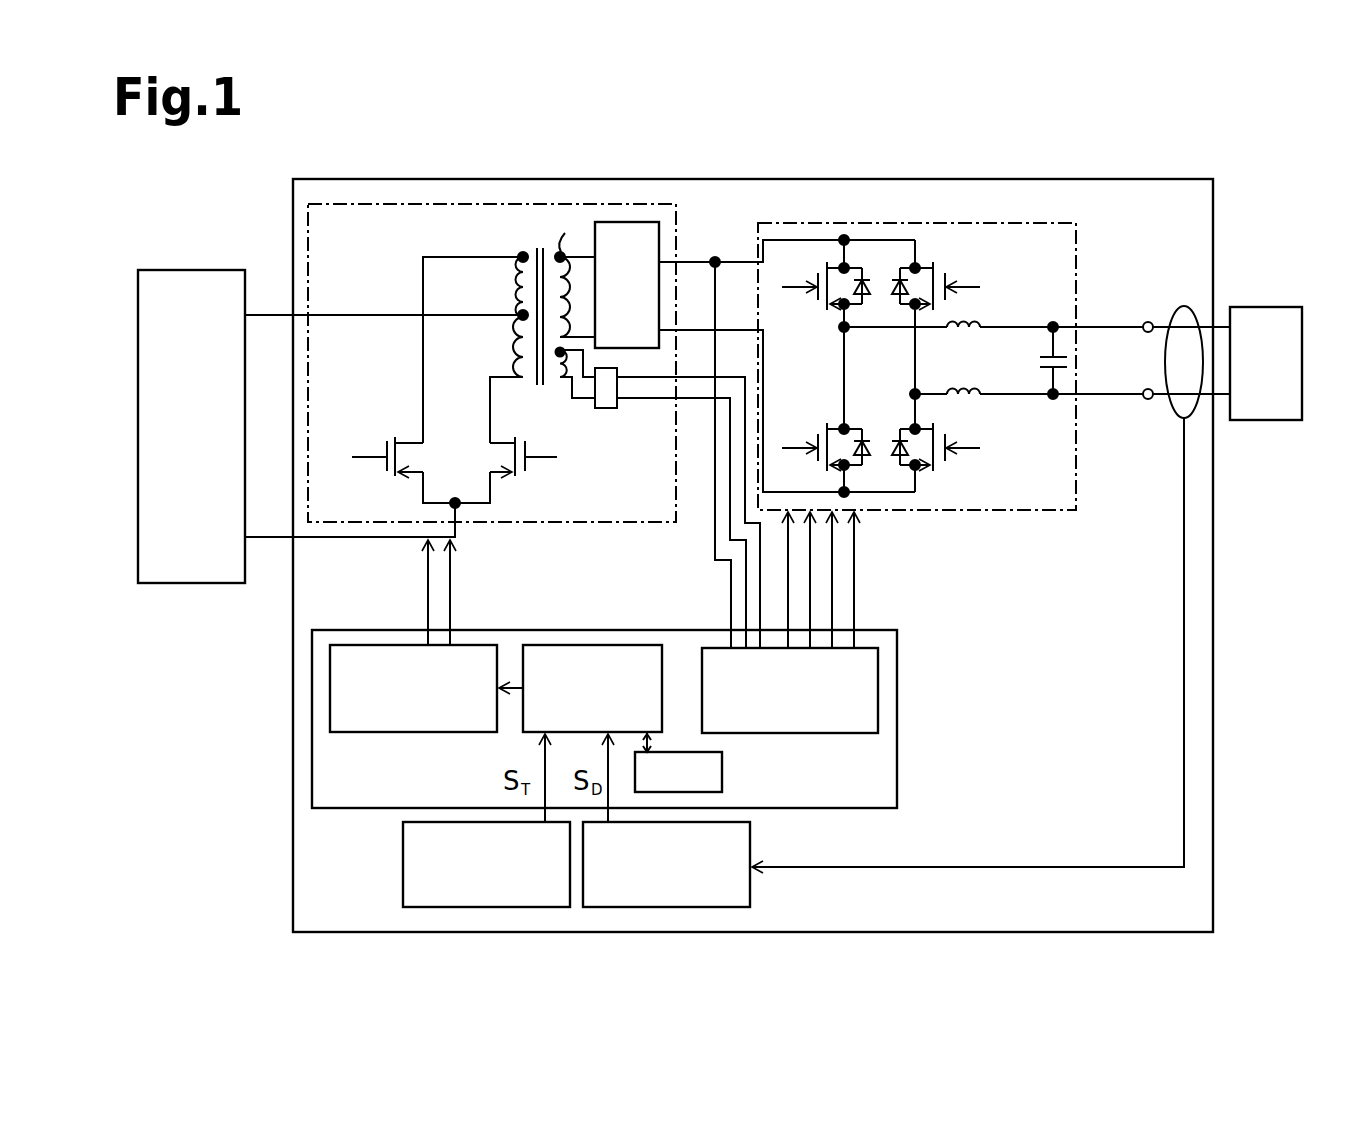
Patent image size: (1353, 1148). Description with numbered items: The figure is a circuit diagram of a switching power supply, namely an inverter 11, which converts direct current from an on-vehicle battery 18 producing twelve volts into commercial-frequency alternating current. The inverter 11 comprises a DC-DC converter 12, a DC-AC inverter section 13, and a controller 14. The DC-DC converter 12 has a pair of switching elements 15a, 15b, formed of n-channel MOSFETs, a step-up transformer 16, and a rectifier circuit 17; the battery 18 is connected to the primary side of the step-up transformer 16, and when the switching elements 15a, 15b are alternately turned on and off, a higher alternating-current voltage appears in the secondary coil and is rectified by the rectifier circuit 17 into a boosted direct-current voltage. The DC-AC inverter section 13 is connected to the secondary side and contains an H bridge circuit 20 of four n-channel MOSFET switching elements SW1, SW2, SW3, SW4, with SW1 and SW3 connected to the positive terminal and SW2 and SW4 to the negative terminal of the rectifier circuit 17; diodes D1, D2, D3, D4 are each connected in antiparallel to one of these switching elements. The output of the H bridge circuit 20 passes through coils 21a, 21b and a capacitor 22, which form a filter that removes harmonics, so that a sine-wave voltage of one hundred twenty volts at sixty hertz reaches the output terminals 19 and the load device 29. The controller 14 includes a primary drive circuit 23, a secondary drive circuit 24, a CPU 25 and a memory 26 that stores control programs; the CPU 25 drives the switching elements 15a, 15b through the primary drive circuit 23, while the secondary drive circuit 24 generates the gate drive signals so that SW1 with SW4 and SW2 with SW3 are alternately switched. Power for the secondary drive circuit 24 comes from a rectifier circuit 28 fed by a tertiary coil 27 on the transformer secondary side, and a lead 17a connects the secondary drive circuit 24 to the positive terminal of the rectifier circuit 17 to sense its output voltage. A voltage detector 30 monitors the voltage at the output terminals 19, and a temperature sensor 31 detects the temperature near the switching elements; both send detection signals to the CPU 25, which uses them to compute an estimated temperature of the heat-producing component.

The inverter 11 is at (728, 173).
The DC-DC converter 12 is at (300, 233).
The DC-AC inverter section 13 is at (1011, 221).
The controller 14 is at (309, 657).
The switching element 15a is at (410, 443).
The switching element 15b is at (498, 443).
The step-up transformer 16 is at (520, 246).
The rectifier circuit 17 is at (607, 221).
The lead 17a is at (730, 580).
The on-vehicle battery 18 is at (206, 270).
The output terminals 19 is at (1150, 322).
The H bridge circuit 20 is at (918, 506).
The coil (reactor) 21a is at (983, 314).
The coil (reactor) 21b is at (964, 384).
The capacitor 22 is at (1040, 368).
The primary drive circuit 23 is at (432, 733).
The secondary drive circuit 24 is at (848, 734).
The CPU 25 is at (545, 645).
The memory 26 is at (722, 773).
The tertiary coil 27 is at (563, 379).
The rectifier circuit 28 is at (605, 410).
The load device 29 is at (1258, 421).
The voltage detector 30 is at (752, 892).
The temperature sensor 31 is at (403, 868).
The first switching element SW1 is at (832, 313).
The second switching element SW2 is at (833, 420).
The third switching element SW3 is at (927, 258).
The fourth switching element SW4 is at (955, 431).
The diode D1 is at (864, 282).
The diode D2 is at (862, 470).
The diode D3 is at (898, 284).
The diode D4 is at (902, 470).